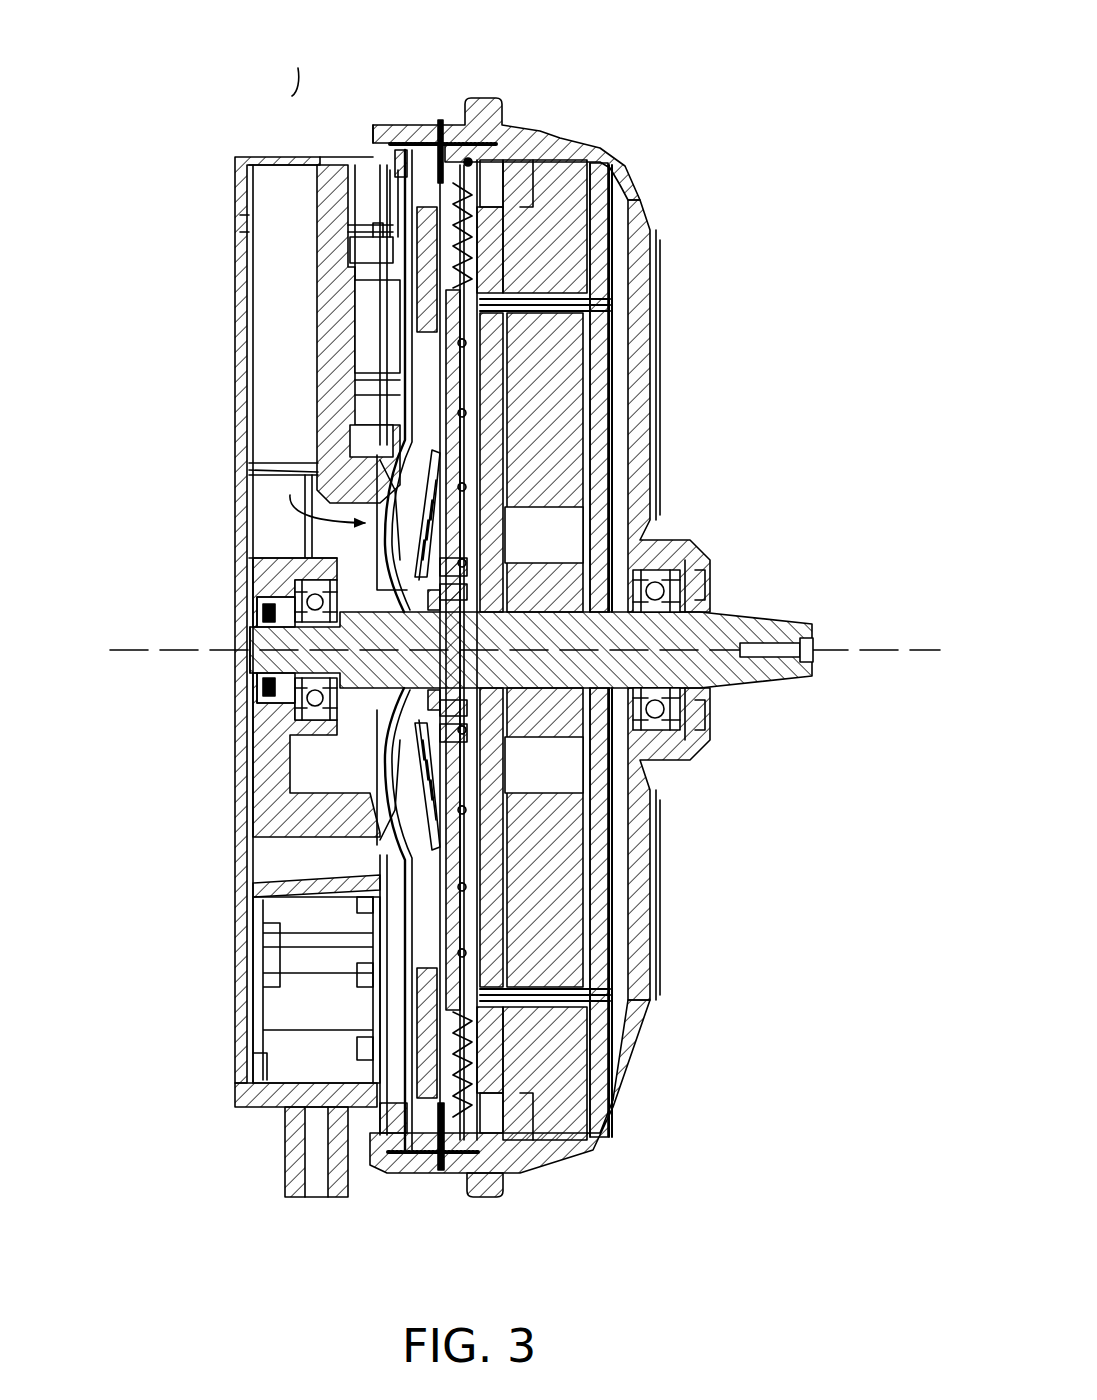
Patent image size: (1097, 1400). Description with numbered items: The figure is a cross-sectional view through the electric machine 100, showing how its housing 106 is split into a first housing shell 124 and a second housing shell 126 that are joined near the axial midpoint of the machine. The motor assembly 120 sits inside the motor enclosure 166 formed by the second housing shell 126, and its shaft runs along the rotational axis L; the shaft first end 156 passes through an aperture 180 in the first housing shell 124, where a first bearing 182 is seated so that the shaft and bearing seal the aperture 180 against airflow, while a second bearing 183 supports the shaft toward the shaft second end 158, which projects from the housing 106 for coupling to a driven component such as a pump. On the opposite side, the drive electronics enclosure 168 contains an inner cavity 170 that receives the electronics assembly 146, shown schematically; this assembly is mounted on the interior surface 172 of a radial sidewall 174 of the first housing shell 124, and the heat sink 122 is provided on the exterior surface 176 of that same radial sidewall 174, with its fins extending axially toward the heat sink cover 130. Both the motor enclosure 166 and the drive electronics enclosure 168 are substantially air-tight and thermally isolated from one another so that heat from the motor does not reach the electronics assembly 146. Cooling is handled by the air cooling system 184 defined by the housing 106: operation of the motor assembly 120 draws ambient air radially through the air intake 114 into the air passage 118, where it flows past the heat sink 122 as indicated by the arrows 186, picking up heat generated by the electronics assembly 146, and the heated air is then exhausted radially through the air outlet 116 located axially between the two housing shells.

The electric machine 100 is at (696, 97).
The housing 106 is at (658, 387).
The air intake 114 is at (266, 152).
The air outlet 116 is at (440, 208).
The air passage 118 is at (290, 348).
The motor assembly 120 is at (564, 292).
The passive heat exchanger 122 is at (273, 268).
The first housing shell 124 is at (240, 160).
The second housing shell 126 is at (636, 192).
The heat sink cover 130 is at (240, 215).
The drive electronics assembly 146 is at (375, 285).
The shaft first end 156 is at (237, 652).
The shaft second end 158 is at (818, 633).
The motor enclosure 166 is at (570, 1090).
The drive electronics enclosure 168 is at (325, 470).
The inner cavity 170 is at (390, 178).
The interior surface 172 is at (350, 318).
The radial sidewall 174 is at (368, 432).
The exterior surface 176 is at (280, 240).
The aperture 180 is at (562, 607).
The first bearing 182 is at (318, 722).
The second bearing 183 is at (668, 726).
The air cooling system 184 is at (315, 537).
The arrows 186 is at (285, 208).
The rotational axis L is at (878, 655).